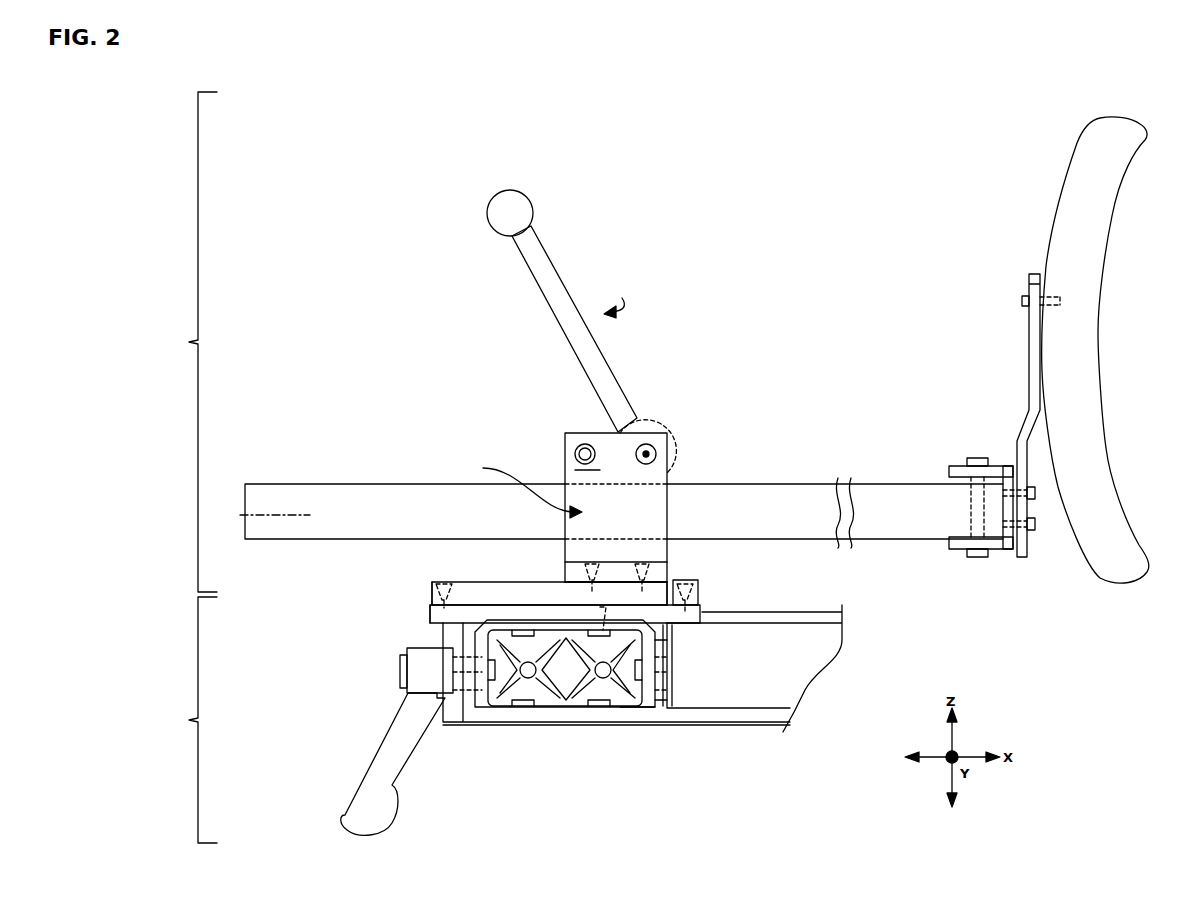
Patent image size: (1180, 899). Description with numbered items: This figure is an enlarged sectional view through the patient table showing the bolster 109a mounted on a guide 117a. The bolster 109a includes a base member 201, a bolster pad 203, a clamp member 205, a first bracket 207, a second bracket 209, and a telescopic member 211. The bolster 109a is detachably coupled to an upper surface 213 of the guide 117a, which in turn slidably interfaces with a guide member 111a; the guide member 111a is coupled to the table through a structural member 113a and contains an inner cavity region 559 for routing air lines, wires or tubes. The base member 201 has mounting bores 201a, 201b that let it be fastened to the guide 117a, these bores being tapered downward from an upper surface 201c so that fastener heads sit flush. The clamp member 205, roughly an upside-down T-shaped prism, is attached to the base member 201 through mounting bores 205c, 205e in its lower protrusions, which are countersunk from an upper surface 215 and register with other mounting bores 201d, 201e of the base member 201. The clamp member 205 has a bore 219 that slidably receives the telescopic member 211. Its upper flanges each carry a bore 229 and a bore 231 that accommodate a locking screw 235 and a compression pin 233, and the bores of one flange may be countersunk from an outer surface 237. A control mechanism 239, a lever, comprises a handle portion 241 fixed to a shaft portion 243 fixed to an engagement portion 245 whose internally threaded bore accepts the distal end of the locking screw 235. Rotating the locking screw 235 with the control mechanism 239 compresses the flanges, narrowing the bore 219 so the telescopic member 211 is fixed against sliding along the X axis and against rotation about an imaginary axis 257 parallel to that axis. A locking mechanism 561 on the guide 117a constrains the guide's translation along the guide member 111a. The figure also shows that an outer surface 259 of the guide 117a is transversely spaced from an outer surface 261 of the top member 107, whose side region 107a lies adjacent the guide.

The top member 107 is at (795, 612).
The frame bracket 107a is at (688, 698).
The bolster 109a is at (189, 342).
The guide member 111a is at (567, 708).
The structural member 113a is at (635, 713).
The guide 117a is at (189, 720).
The base member 201 is at (512, 586).
The mounting bore 201a is at (443, 583).
The mounting bore 201b is at (700, 585).
The upper surface 201c is at (480, 582).
The mounting bore 201d is at (587, 583).
The mounting bore 201e is at (680, 567).
The bolster pad 203 is at (1100, 117).
The clamp member 205 is at (570, 433).
The mounting bore 205c is at (642, 560).
The mounting bore 205e is at (593, 560).
The first bracket 207 is at (962, 466).
The second bracket 209 is at (1027, 441).
The telescopic member 211 is at (262, 484).
The upper surface 213 is at (435, 594).
The upper surface 215 is at (667, 562).
The bore 219 is at (521, 489).
The bore 229 is at (655, 448).
The bore 231 is at (577, 452).
The compression pin 233 is at (652, 457).
The locking screw 235 is at (590, 445).
The outer surface 237 is at (597, 475).
The control mechanism 239 is at (621, 299).
The handle portion 241 is at (510, 190).
The shaft portion 243 is at (558, 297).
The engagement portion 245 is at (670, 421).
The imaginary axis 257 is at (260, 515).
The outer surface 259 is at (673, 692).
The outer surface 261 is at (665, 642).
The inner cavity region 559 is at (417, 648).
The locking mechanism 561 is at (372, 760).